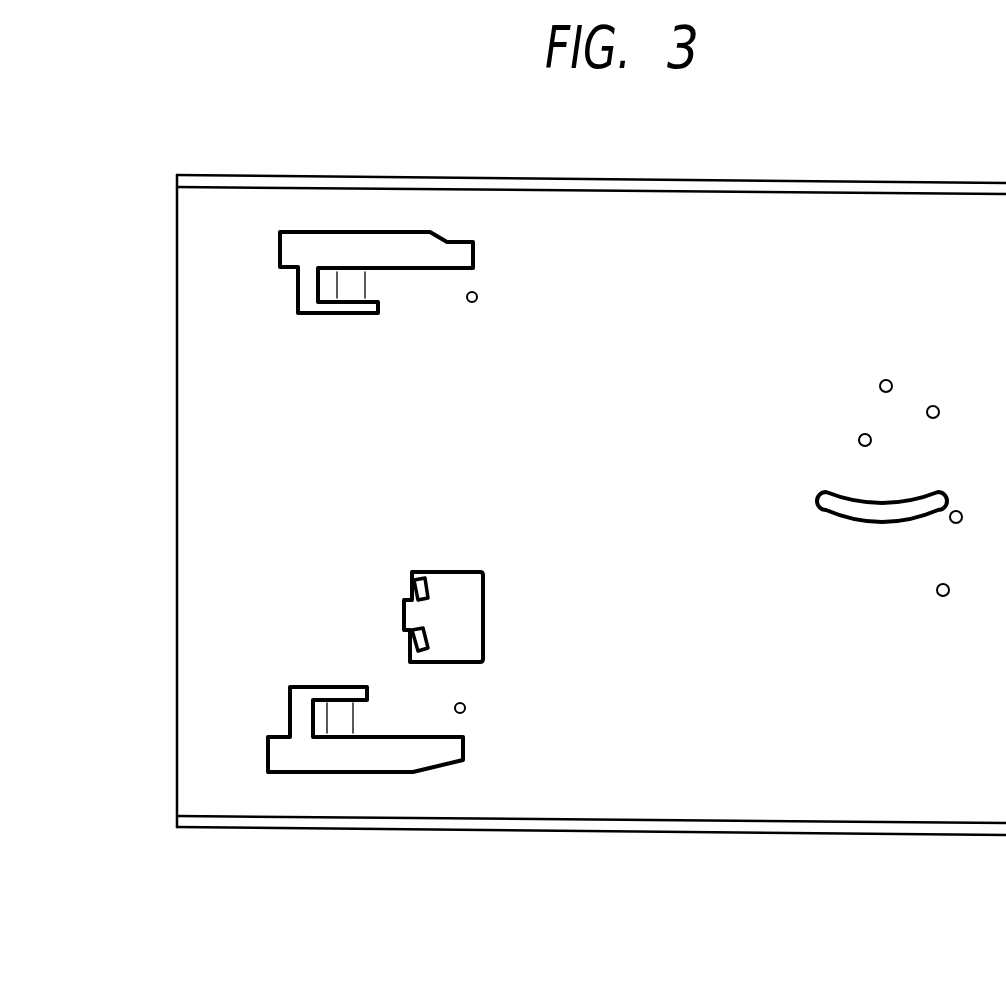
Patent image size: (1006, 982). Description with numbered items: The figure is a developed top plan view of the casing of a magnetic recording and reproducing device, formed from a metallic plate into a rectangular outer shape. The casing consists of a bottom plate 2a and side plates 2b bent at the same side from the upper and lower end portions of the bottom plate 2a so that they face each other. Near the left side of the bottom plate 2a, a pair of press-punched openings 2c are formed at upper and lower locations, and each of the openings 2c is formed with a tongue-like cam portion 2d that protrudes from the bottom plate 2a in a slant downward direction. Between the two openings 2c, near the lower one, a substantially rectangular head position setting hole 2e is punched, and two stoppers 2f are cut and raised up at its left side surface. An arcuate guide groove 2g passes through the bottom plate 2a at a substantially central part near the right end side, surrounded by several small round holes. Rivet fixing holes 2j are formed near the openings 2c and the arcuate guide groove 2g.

The bottom plate 2a is at (688, 342).
The side plates 2b is at (612, 186).
The openings 2c is at (329, 247).
The cam portions 2d is at (330, 287).
The head position setting hole 2e is at (467, 623).
The stoppers 2f is at (427, 590).
The arcuate guide groove 2g is at (902, 512).
The rivet fixing holes 2j is at (477, 292).